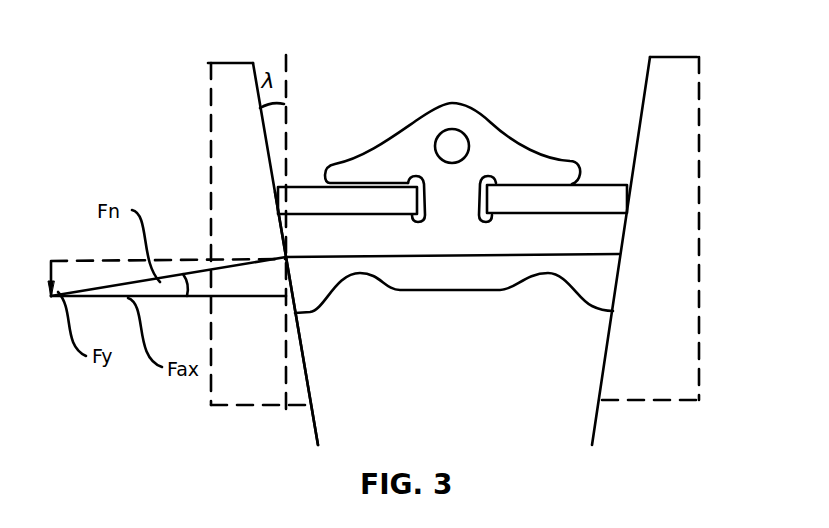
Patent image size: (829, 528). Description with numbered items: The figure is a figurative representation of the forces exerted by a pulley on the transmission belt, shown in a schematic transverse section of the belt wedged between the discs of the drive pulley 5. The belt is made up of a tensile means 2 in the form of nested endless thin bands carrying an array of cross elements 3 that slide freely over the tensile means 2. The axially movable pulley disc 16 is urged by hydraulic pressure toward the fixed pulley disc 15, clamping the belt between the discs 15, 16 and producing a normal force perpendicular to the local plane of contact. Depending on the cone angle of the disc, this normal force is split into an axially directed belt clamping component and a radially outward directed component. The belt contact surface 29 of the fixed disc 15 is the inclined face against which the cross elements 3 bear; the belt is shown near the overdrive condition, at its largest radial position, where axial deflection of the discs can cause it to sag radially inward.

The drive pulley 5 is at (172, 109).
The tensile means 2 is at (590, 188).
The cross elements 3 is at (410, 158).
The fixed pulley disc 15 is at (263, 250).
The movable pulley disc 16 is at (645, 251).
The belt contact surface 29 is at (316, 372).